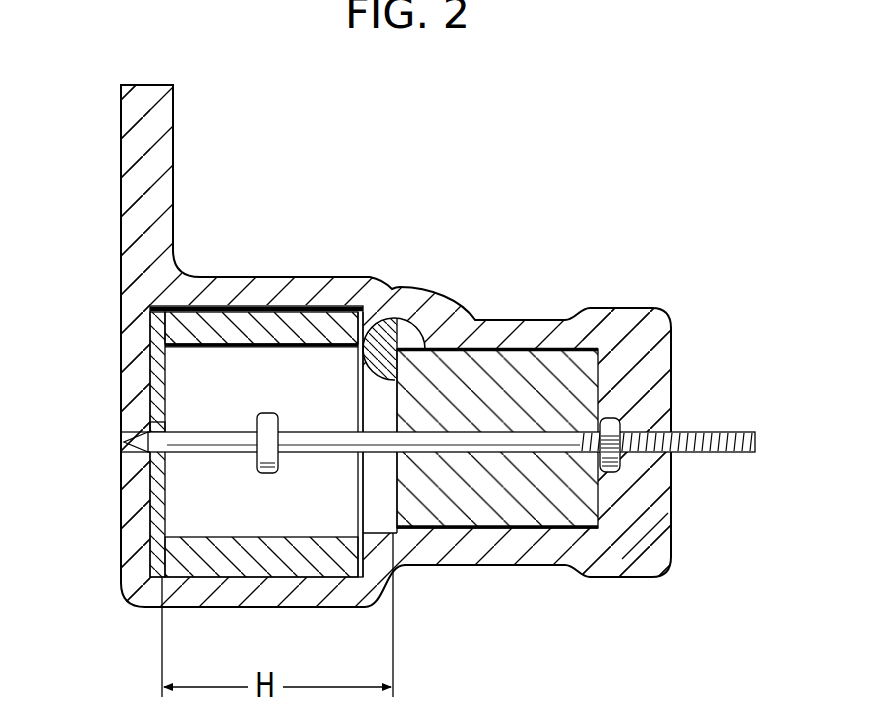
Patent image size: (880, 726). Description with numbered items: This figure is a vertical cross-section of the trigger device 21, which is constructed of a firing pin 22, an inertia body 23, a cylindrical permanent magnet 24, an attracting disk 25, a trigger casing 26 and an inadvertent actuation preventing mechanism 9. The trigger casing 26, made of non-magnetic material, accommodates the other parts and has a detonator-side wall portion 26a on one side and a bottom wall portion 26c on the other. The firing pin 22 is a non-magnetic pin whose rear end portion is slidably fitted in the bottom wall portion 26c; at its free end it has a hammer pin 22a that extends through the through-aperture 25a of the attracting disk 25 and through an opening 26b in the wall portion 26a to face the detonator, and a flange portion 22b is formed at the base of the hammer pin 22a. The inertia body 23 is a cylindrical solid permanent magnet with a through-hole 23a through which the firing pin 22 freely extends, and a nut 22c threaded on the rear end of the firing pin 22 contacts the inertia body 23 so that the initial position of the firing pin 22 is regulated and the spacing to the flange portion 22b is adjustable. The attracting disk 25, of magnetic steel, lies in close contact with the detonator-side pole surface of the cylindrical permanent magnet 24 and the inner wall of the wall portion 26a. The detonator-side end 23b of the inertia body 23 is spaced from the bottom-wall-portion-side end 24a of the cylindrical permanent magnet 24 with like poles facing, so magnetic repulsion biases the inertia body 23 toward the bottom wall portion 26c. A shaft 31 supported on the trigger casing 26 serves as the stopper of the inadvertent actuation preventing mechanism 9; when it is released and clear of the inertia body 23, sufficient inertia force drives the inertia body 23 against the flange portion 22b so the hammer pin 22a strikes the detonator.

The inadvertent actuation preventing mechanism 9 is at (394, 314).
The trigger device 21 is at (496, 268).
The firing pin 22 is at (329, 456).
The hammer pin 22a is at (197, 436).
The flange portion 22b is at (266, 473).
The nut 22c is at (610, 418).
The inertia body 23 is at (540, 372).
The through-hole 23a is at (476, 433).
The detonator-side end 23b is at (388, 498).
The cylindrical permanent magnet 24 is at (272, 318).
The bottom-wall-portion-side end 24a is at (364, 406).
The attracting disk 25 is at (157, 343).
The through-aperture 25a is at (140, 431).
The trigger casing 26 is at (598, 316).
The detonator-side wall portion 26a is at (128, 531).
The opening 26b is at (122, 436).
The bottom wall portion 26c is at (650, 531).
The shaft 31 is at (363, 379).